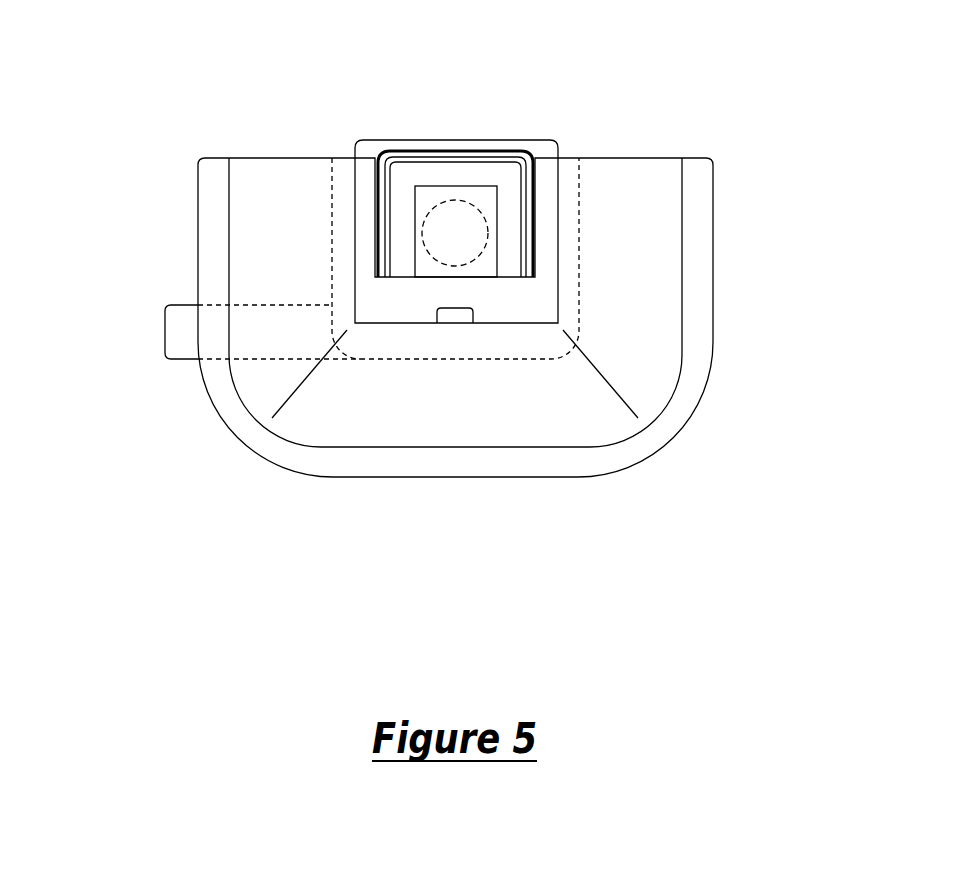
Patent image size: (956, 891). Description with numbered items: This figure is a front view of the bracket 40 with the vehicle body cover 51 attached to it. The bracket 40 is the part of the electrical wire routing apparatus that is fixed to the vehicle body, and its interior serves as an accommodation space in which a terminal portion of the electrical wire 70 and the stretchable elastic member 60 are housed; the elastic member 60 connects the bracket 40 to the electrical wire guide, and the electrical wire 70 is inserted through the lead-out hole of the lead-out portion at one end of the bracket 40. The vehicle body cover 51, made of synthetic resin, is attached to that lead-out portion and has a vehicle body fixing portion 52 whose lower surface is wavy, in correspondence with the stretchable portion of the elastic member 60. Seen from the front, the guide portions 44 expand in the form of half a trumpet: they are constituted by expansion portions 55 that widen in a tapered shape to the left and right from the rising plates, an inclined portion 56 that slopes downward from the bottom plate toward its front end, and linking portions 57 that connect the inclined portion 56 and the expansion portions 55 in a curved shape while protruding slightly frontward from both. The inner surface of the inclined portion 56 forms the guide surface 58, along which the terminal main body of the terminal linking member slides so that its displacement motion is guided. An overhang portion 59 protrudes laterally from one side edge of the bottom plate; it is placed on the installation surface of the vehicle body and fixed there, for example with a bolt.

The bracket 40 is at (285, 162).
The guide portion 44 is at (648, 165).
The vehicle body cover 51 is at (423, 138).
The vehicle body fixing portion 52 is at (488, 145).
The expansion portion 55 is at (207, 233).
The inclined portion 56 is at (470, 463).
The linking portion 57 is at (243, 447).
The guide surface 58 is at (415, 407).
The overhang portion 59 is at (172, 331).
The elastic member 60 is at (448, 173).
The electrical wire 70 is at (482, 230).